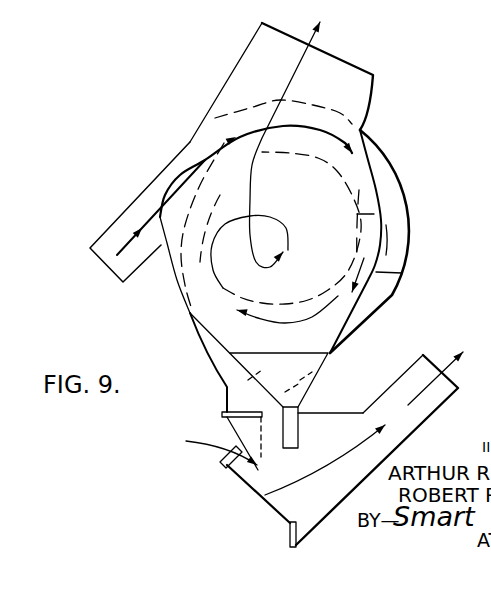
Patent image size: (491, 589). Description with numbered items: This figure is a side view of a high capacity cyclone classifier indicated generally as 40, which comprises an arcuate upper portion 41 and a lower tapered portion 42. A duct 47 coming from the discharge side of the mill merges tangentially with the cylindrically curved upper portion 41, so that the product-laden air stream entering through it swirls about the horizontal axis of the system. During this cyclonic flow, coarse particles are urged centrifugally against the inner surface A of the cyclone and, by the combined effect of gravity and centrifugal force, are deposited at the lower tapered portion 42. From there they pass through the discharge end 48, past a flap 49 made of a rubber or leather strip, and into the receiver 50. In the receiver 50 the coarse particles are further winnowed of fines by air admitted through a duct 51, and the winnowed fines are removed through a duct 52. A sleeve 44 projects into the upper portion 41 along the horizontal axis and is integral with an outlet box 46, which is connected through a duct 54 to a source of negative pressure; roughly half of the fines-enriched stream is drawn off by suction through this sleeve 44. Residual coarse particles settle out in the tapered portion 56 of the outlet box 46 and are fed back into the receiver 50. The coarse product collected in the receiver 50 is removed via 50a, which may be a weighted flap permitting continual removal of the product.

The classifier 40 is at (383, 118).
The arcuate upper portion 41 is at (380, 147).
The lower tapered portion 42 is at (195, 335).
The sleeve 44 is at (384, 211).
The inner surface A is at (404, 241).
The outlet box 46 is at (400, 275).
The duct 47 is at (111, 238).
The discharge end 48 is at (227, 428).
The flap 49 is at (232, 433).
The receiver 50 is at (253, 492).
The weighted flap 50a is at (290, 537).
The duct 51 is at (228, 468).
The duct 52 is at (430, 411).
The duct 54 is at (253, 40).
The tapered portion 56 is at (314, 380).